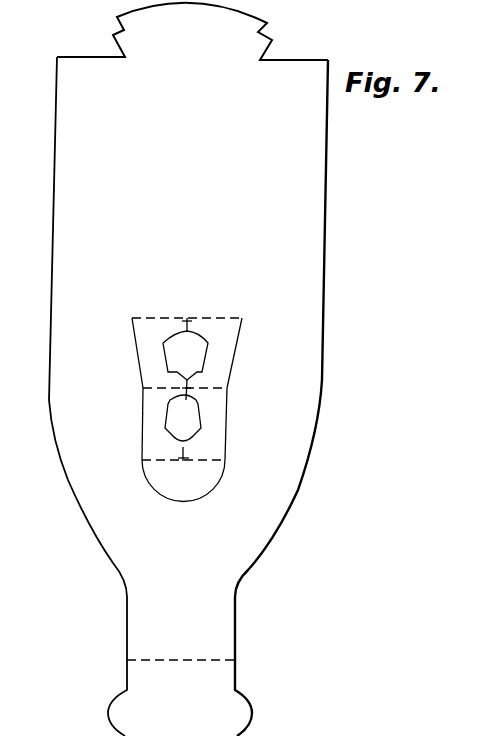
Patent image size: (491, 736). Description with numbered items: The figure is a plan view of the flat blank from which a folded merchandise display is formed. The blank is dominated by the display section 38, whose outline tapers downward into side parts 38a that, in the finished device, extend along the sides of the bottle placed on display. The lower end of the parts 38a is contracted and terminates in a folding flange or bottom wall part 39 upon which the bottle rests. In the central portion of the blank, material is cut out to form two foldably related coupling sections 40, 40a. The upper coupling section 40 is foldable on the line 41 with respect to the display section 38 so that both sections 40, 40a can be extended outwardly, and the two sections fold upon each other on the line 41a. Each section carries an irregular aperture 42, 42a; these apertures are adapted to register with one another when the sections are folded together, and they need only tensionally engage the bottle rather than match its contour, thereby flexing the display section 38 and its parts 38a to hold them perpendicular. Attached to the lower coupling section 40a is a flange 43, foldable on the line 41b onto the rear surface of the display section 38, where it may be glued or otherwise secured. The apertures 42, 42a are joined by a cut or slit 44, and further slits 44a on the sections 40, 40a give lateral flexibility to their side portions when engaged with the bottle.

The display section 38 is at (328, 196).
The side parts of display section 38a is at (75, 477).
The folding flange or bottom wall part 39 is at (225, 690).
The coupling section 40 is at (228, 350).
The coupling section 40a is at (220, 415).
The fold line 41 is at (222, 317).
The fold line 41a is at (212, 388).
The fold line 41b is at (216, 461).
The irregular aperture 42 is at (165, 355).
The irregular aperture 42a is at (163, 423).
The flange 43 is at (215, 482).
The cut or slit 44 is at (181, 392).
The slits 44a is at (192, 323).